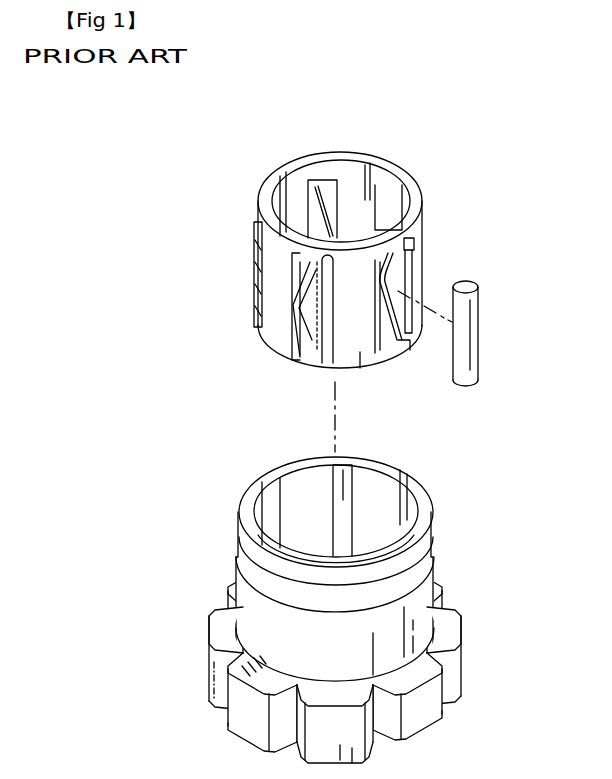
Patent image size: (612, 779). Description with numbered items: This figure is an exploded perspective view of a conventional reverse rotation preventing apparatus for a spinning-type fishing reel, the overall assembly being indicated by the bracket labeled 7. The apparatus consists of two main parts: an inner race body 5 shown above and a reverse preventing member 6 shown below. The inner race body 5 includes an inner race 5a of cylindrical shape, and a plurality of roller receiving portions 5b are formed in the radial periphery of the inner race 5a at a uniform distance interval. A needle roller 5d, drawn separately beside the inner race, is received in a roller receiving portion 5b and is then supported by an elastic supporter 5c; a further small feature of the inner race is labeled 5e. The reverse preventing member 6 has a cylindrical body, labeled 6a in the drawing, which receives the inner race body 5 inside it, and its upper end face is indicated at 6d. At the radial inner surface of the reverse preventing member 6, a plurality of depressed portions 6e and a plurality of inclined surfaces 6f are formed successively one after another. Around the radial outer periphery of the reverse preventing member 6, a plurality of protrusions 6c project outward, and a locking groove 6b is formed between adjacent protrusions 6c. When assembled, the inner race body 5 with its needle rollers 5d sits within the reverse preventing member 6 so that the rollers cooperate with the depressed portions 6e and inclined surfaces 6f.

The inner race body 5 is at (248, 254).
The inner race 5a is at (400, 171).
The roller receiving portion 5b is at (420, 257).
The elastic supporter 5c is at (403, 347).
The needle roller 5d is at (472, 322).
The projection 5e is at (410, 235).
The reverse preventing member 6 is at (222, 556).
The cylindrical portion 6a is at (437, 580).
The locking groove 6b is at (383, 738).
The protrusion 6c is at (217, 712).
The top face 6d is at (375, 490).
The depressed portion 6e is at (433, 502).
The inclined surface 6f is at (420, 497).
The prior art assembly 7 is at (130, 200).